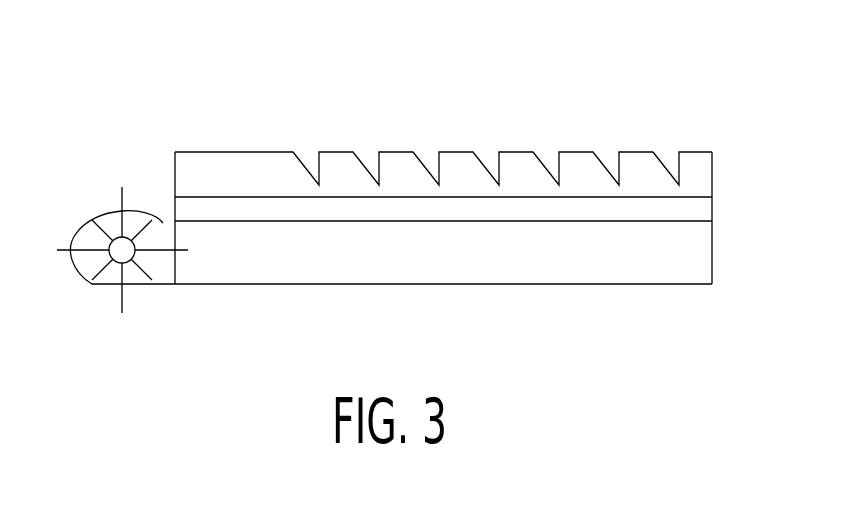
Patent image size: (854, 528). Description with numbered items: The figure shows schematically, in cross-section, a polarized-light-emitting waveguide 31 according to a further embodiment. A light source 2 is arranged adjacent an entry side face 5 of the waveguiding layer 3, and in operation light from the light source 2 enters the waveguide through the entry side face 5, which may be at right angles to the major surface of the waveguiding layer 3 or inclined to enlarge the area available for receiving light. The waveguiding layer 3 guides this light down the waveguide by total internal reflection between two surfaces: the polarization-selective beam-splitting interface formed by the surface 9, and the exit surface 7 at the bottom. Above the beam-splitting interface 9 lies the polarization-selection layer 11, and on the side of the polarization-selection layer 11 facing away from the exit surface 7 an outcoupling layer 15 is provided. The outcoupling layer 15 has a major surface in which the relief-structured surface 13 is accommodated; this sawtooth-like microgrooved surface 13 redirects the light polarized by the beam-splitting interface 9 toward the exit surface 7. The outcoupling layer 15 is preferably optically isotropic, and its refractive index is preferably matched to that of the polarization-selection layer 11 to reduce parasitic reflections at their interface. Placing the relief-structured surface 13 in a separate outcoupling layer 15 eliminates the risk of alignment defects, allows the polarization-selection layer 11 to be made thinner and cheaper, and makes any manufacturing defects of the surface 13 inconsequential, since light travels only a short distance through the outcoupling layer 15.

The waveguide 31 is at (117, 138).
The light source 2 is at (98, 243).
The entry side face 5 is at (175, 224).
The waveguiding layer 3 is at (677, 262).
The exit surface 7 is at (488, 285).
The polarization-selective beam-splitting interface 9 is at (663, 221).
The polarization-selection layer 11 is at (582, 208).
The relief-structured surface 13 is at (453, 152).
The outcoupling layer 15 is at (697, 163).